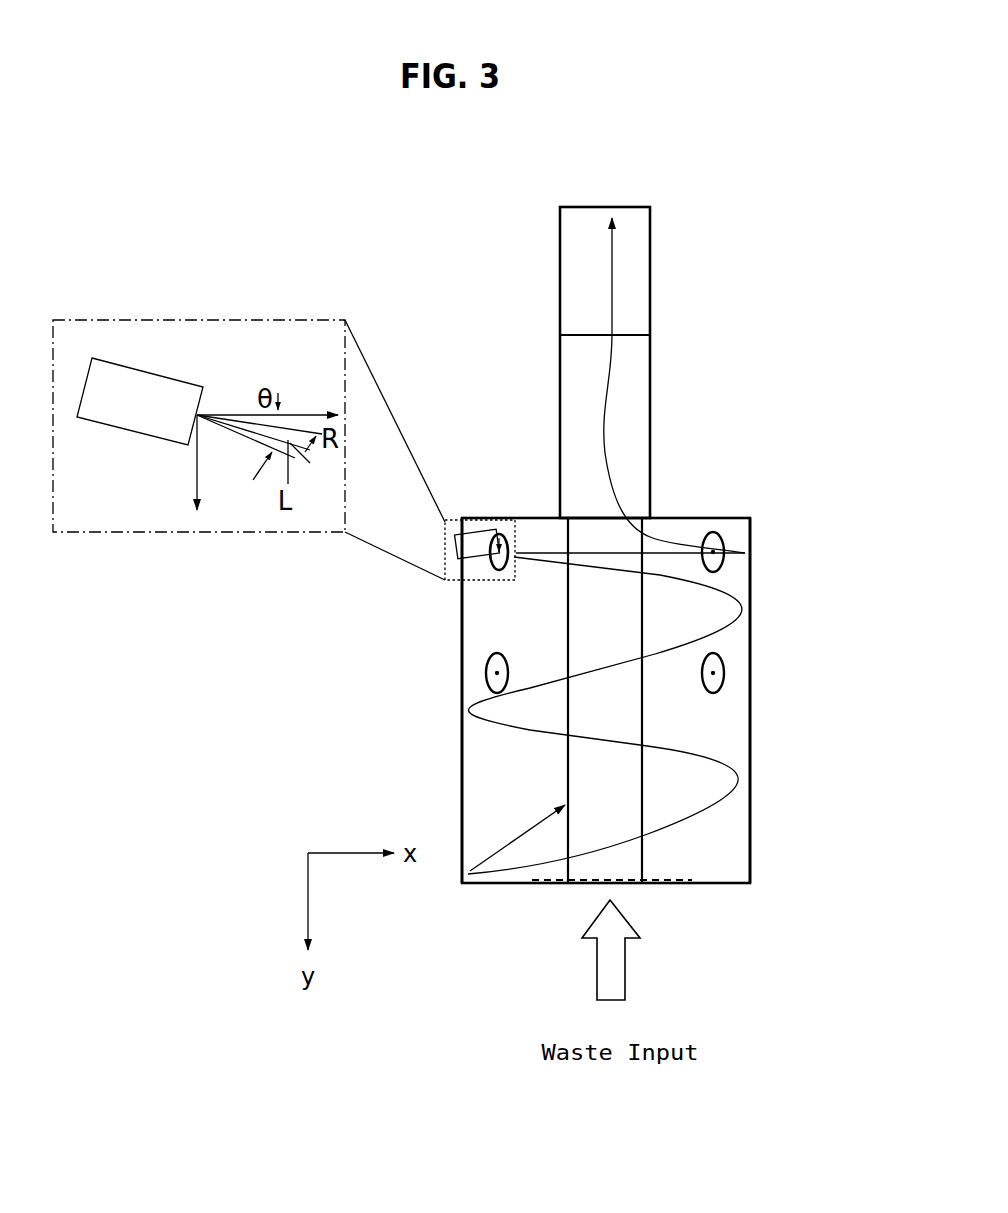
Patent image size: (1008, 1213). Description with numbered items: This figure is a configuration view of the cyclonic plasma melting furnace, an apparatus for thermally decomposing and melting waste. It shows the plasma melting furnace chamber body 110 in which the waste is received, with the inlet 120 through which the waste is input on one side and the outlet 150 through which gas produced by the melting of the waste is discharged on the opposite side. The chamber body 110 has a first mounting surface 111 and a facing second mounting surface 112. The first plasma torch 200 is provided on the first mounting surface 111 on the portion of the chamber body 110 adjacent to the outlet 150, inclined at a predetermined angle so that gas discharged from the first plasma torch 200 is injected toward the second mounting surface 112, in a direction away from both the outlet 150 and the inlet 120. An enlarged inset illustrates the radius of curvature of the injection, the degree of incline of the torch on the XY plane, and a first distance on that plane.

The plasma melting furnace chamber body 110 is at (762, 602).
The first mounting surface 111 is at (462, 760).
The second mounting surface 112 is at (752, 696).
The inlet 120 is at (536, 889).
The outlet 150 is at (625, 207).
The first plasma torch 200 is at (478, 530).